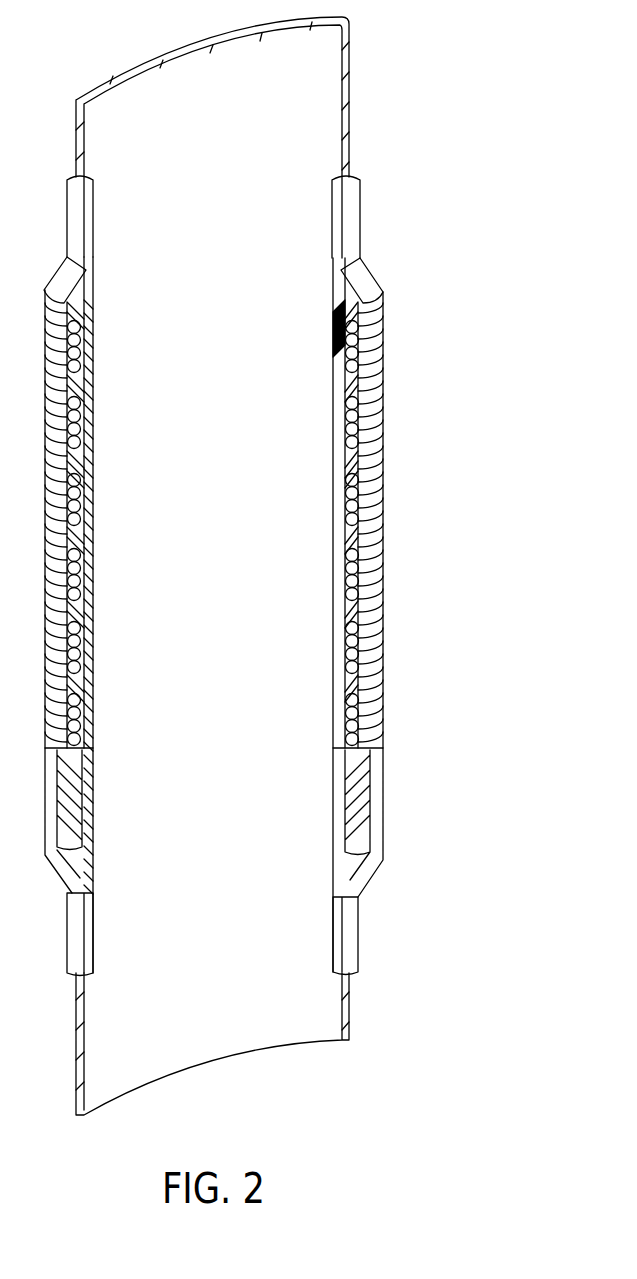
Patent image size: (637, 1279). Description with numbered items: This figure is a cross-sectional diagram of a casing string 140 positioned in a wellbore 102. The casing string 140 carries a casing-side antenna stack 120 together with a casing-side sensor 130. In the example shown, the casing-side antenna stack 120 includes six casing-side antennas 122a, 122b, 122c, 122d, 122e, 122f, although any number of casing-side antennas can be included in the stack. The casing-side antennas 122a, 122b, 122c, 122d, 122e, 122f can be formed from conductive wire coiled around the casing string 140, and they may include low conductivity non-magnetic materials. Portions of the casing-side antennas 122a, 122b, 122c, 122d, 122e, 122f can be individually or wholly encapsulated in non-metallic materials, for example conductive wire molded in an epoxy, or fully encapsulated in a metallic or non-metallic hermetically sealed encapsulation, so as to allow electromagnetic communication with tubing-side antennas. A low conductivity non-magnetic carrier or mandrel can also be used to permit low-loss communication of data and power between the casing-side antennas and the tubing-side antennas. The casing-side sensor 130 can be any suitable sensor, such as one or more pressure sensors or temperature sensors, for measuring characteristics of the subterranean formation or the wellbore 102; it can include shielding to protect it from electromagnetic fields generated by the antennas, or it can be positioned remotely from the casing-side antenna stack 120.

The wellbore 102 is at (307, 125).
The casing-side antenna stack 120 is at (358, 280).
The casing-side antenna 122a is at (367, 340).
The casing-side antenna 122b is at (367, 427).
The casing-side antenna 122c is at (367, 502).
The casing-side antenna 122d is at (367, 577).
The casing-side antenna 122e is at (367, 640).
The casing-side antenna 122f is at (367, 720).
The casing-side sensor 130 is at (357, 817).
The casing string 140 is at (340, 930).